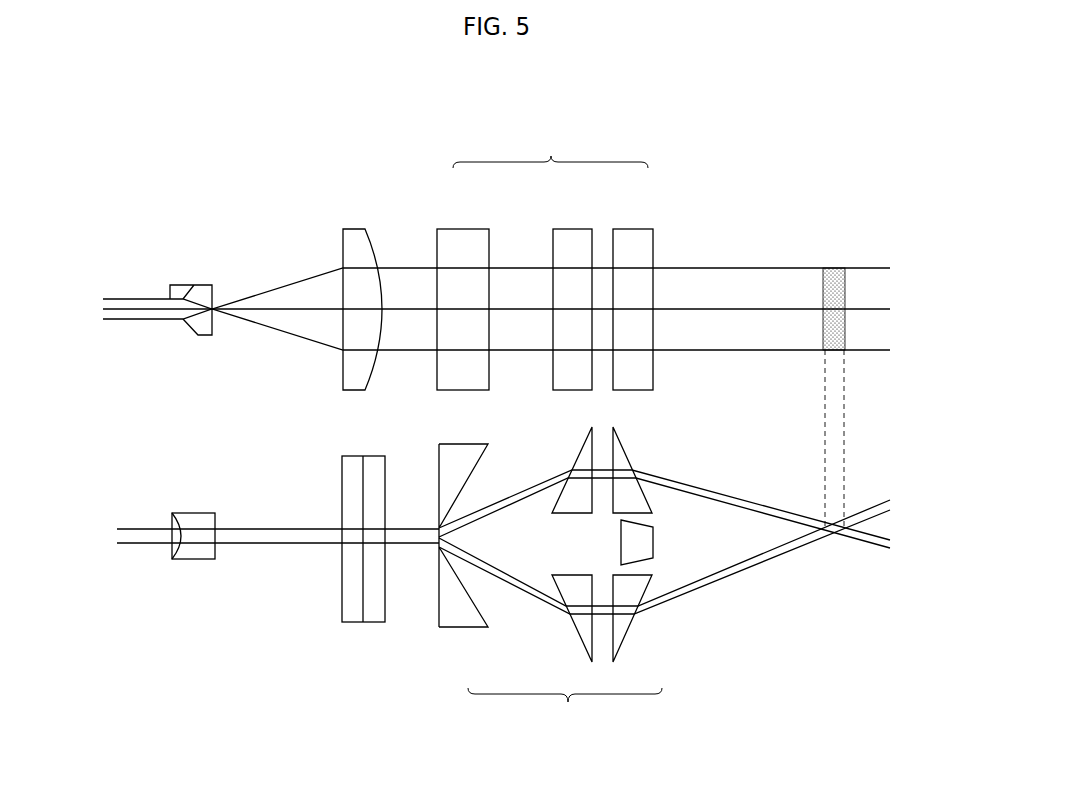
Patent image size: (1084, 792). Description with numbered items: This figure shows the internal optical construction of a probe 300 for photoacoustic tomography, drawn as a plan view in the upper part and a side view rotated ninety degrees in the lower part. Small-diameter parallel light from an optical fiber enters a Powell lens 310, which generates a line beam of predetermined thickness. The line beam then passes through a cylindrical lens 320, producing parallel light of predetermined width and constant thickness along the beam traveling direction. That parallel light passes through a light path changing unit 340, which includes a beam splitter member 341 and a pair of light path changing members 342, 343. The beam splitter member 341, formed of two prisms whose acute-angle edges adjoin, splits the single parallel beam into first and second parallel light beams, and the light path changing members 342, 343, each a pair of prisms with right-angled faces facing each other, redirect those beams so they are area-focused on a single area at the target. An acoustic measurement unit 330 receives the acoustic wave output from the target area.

The probe 300 is at (755, 221).
The Powell lens 310 is at (197, 282).
The cylindrical lens 320 is at (354, 237).
The acoustic measurement unit 330 is at (643, 542).
The light path changing unit 340 is at (557, 429).
The beam splitter member 341 is at (465, 240).
The light path changing member 342 is at (573, 240).
The light path changing member 343 is at (583, 623).